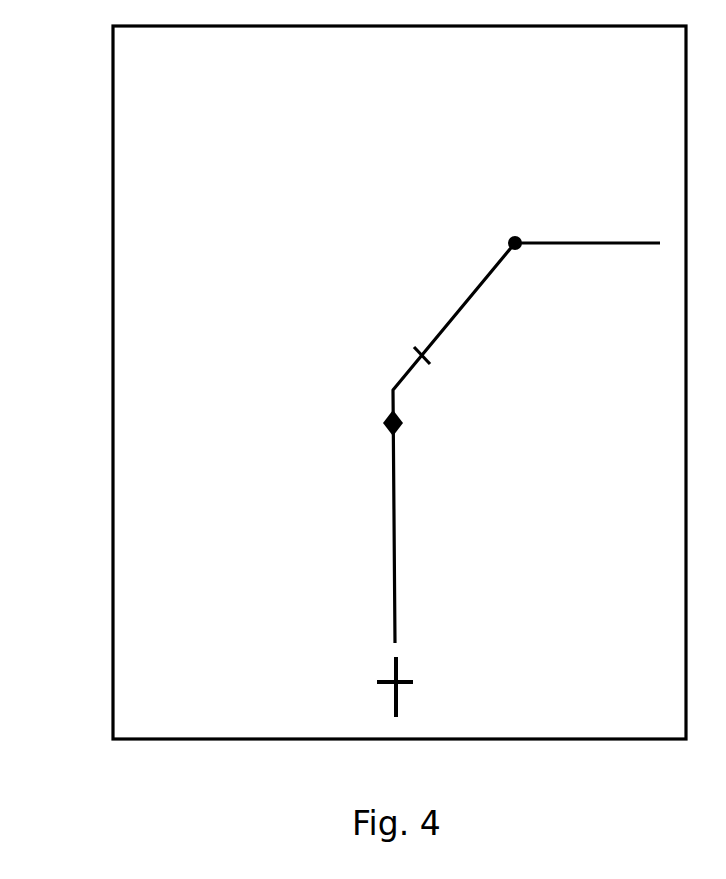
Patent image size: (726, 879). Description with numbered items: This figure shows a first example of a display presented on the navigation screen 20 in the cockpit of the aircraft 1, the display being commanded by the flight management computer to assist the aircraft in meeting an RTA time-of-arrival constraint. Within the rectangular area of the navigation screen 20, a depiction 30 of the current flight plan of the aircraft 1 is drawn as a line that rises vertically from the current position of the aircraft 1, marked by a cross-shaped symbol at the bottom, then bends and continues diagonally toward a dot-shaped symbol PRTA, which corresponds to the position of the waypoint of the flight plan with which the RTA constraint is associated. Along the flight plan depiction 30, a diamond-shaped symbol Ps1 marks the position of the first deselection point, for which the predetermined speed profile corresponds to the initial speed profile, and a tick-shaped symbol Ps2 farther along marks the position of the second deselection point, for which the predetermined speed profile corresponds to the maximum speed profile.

The navigation screen 20 is at (110, 113).
The depiction of the current flight plan 30 is at (392, 566).
The aircraft 1 is at (357, 673).
The symbol PS1 Ps1 is at (380, 423).
The symbol PS2 Ps2 is at (403, 344).
The symbol PRTA is at (514, 233).